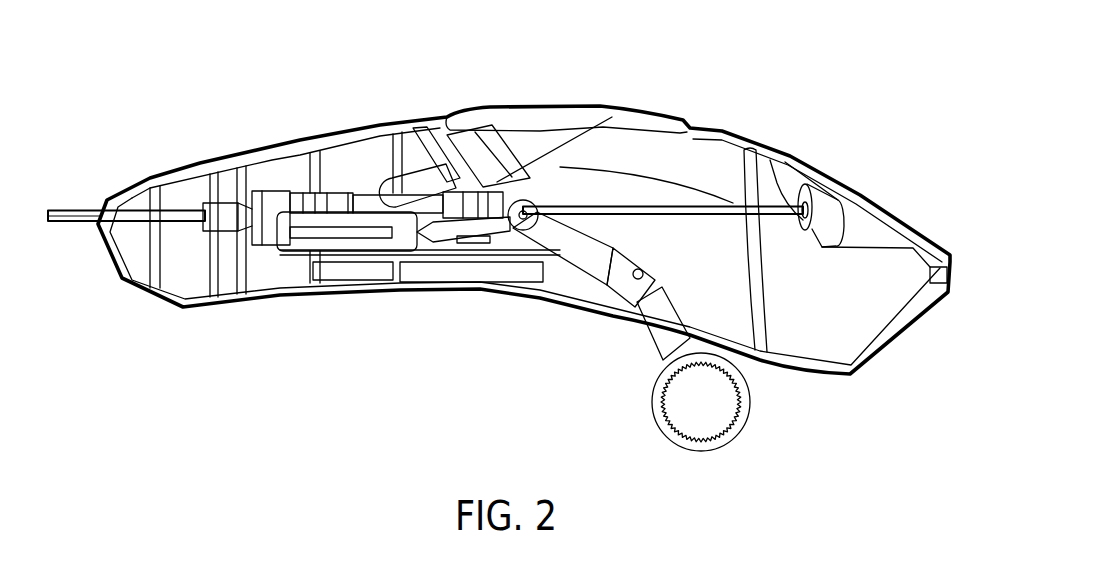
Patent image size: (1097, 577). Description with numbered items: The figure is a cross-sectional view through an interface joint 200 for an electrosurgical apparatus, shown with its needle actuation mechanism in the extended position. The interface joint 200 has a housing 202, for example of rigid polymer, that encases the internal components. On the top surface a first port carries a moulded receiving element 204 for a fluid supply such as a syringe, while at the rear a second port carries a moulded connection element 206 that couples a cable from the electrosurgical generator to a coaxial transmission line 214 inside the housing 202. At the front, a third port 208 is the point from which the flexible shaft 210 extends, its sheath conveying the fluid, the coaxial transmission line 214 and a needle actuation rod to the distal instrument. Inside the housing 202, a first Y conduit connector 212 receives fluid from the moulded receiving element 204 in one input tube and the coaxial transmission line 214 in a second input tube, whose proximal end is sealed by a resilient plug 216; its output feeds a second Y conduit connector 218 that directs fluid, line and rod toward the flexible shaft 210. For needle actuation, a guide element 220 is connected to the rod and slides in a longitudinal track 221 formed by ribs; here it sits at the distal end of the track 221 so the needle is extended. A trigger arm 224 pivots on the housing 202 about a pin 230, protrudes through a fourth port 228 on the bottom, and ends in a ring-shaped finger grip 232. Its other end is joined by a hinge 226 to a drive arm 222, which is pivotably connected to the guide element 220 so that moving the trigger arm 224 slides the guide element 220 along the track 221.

The interface joint 200 is at (840, 68).
The housing 202 is at (287, 140).
The moulded receiving element 204 is at (470, 121).
The moulded connection element 206 is at (870, 230).
The third port 208 is at (110, 210).
The flexible shaft 210 is at (60, 222).
The first Y conduit connector 212 is at (388, 198).
The coaxial transmission line 214 is at (672, 210).
The plug 216 is at (491, 186).
The second Y conduit connector 218 is at (248, 194).
The guide element 220 is at (320, 240).
The track 221 is at (377, 258).
The drive arm 222 is at (457, 238).
The trigger arm 224 is at (573, 246).
The hinge 226 is at (520, 230).
The fourth port 228 is at (638, 318).
The pin 230 is at (620, 302).
The finger grip 232 is at (730, 432).